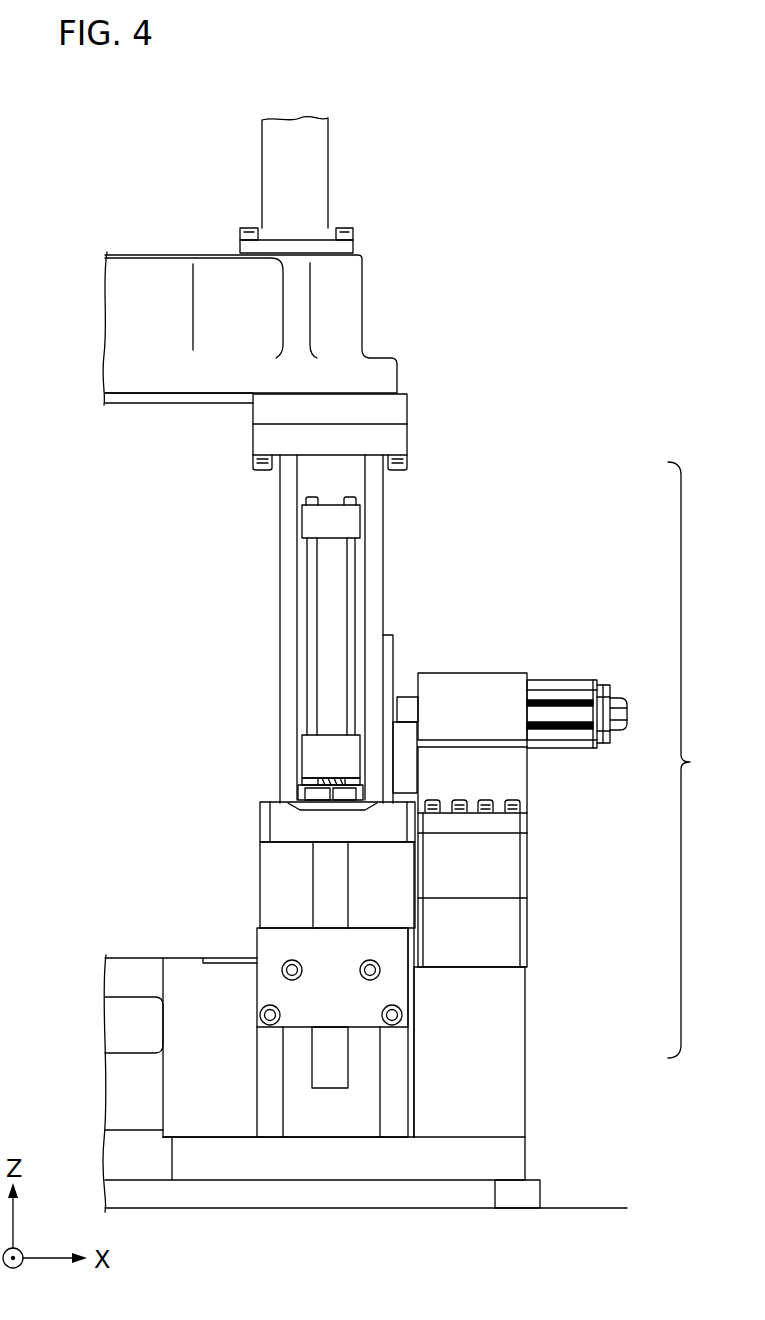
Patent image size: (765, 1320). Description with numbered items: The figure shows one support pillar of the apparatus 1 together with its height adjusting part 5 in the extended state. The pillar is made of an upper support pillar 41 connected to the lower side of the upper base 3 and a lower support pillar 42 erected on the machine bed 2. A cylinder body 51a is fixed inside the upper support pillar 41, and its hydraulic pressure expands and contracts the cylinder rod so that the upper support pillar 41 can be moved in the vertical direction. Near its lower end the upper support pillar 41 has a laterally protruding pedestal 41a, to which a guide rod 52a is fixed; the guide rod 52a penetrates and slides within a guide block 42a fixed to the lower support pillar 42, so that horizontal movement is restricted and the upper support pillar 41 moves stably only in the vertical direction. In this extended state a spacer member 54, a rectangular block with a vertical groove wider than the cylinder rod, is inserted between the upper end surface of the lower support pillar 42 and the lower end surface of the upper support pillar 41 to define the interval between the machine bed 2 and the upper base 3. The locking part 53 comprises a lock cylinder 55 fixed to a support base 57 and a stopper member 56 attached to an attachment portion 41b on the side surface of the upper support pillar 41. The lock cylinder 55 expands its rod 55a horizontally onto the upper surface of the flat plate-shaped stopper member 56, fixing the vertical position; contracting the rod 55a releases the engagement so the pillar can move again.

The processing apparatus 1 is at (580, 138).
The machine bed 2 is at (595, 1207).
The upper base 3 is at (363, 274).
The upper support pillar 41 is at (383, 490).
The pedestal 41a is at (260, 818).
The attachment portion 41b is at (384, 634).
The lower support pillar 42 is at (380, 1091).
The guide block 42a is at (257, 945).
The height adjusting part 5 is at (692, 760).
The cylinder body 51a is at (312, 631).
The guide rod 52a is at (348, 1053).
The locking part 53 is at (511, 650).
The spacer member 54 is at (260, 878).
The lock cylinder 55 is at (578, 680).
The rod 55a is at (408, 697).
The stopper member 56 is at (407, 773).
The support base 57 is at (525, 932).